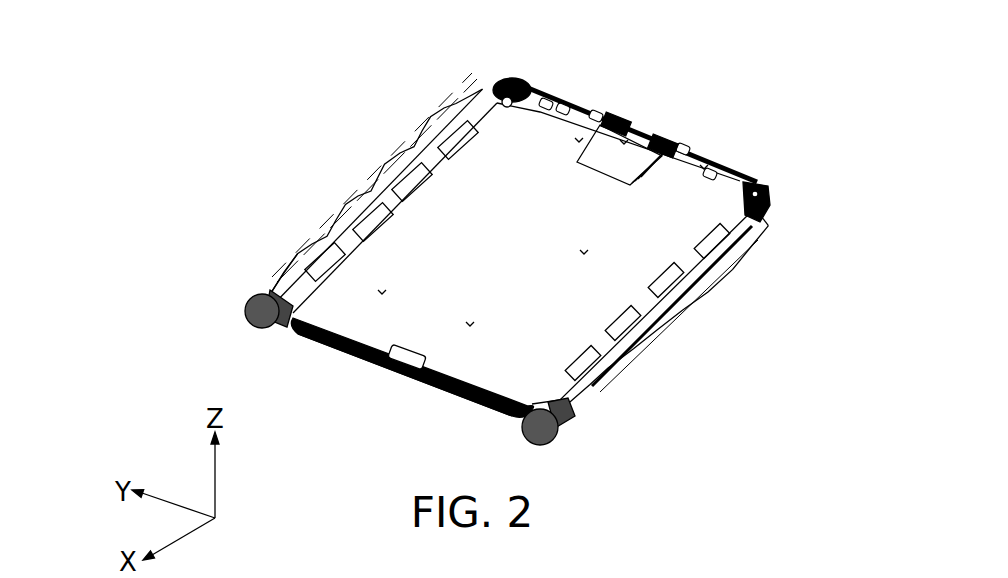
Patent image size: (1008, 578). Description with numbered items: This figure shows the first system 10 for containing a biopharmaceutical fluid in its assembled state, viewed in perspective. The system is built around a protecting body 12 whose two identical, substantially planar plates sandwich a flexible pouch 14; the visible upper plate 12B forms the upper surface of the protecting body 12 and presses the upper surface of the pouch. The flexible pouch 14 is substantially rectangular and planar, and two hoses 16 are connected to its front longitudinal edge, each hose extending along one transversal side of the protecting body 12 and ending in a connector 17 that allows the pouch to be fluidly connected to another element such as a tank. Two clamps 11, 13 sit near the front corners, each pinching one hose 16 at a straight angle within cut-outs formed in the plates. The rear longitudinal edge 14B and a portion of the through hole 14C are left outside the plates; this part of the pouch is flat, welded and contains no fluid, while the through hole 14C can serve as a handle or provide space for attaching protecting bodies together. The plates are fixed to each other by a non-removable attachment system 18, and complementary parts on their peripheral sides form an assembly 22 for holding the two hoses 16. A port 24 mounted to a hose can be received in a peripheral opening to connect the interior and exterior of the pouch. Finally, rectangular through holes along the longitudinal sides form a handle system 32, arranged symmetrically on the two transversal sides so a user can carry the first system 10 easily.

The first system for containing a biopharmaceutical fluid 10 is at (178, 200).
The clamp 11 is at (523, 83).
The protecting body 12 is at (637, 216).
The upper plate 12B is at (618, 267).
The clamp 13 is at (773, 203).
The flexible pouch 14 is at (387, 377).
The rear longitudinal edge 14B is at (345, 354).
The through hole 14C is at (417, 364).
The hose 16 is at (560, 100).
The connector 17 is at (247, 318).
The attachment system 18 is at (377, 195).
The assembly for holding the two hoses 22 is at (404, 149).
The port 24 is at (627, 127).
The handle system 32 is at (302, 251).